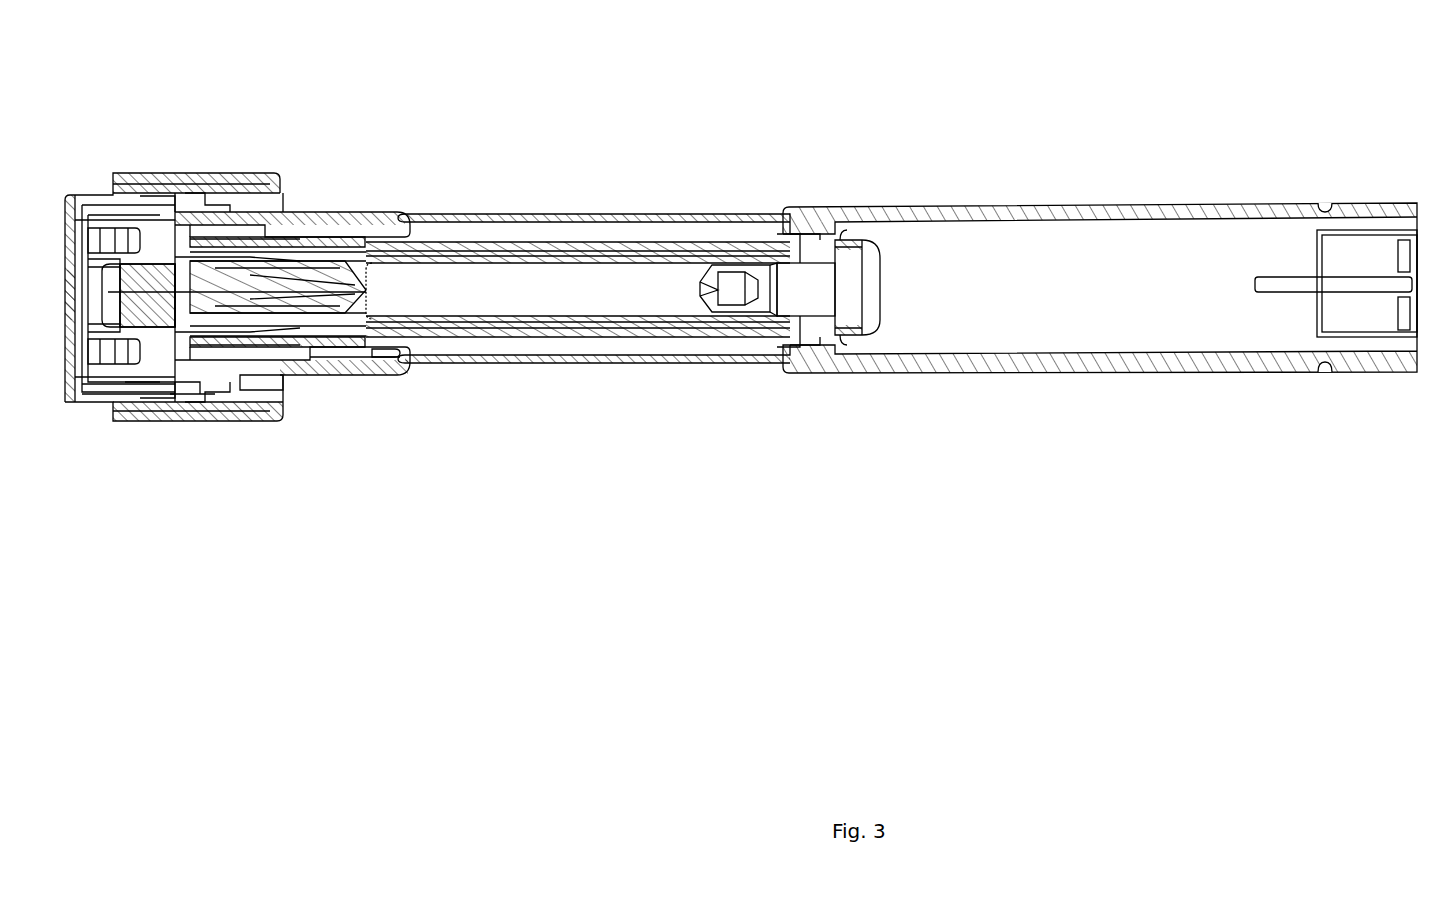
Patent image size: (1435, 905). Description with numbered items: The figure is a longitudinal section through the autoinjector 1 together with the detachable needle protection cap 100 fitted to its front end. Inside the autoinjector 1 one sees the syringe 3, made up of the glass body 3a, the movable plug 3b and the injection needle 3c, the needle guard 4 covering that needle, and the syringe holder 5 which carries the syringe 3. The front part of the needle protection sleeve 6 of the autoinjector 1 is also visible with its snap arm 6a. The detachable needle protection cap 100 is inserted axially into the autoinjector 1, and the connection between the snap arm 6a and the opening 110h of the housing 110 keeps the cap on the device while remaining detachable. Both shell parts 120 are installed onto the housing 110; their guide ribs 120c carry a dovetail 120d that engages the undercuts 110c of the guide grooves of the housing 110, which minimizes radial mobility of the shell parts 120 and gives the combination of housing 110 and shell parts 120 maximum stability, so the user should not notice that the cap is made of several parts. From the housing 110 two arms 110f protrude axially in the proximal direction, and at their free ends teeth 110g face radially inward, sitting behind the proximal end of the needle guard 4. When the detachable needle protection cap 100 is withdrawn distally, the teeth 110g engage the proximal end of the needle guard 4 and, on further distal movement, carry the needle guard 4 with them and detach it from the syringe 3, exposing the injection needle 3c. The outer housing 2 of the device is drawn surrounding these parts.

The autoinjector 1 is at (1042, 154).
The housing 2 is at (893, 210).
The syringe 3 is at (596, 286).
The glass body 3a is at (556, 325).
The movable plug 3b is at (727, 312).
The injection needle 3c is at (273, 412).
The needle guard 4 is at (107, 402).
The syringe holder 5 is at (640, 333).
The needle protection sleeve 6 is at (97, 212).
The snap arm 6a is at (200, 235).
The detachable needle protection cap 100 is at (352, 185).
The housing 110 is at (278, 175).
The undercuts 110c is at (200, 399).
The arms 110f is at (316, 178).
The teeth 110g is at (380, 362).
The opening 110h is at (163, 220).
The shell parts 120 is at (140, 190).
The guide ribs 120c is at (204, 200).
The dovetail 120d is at (208, 397).